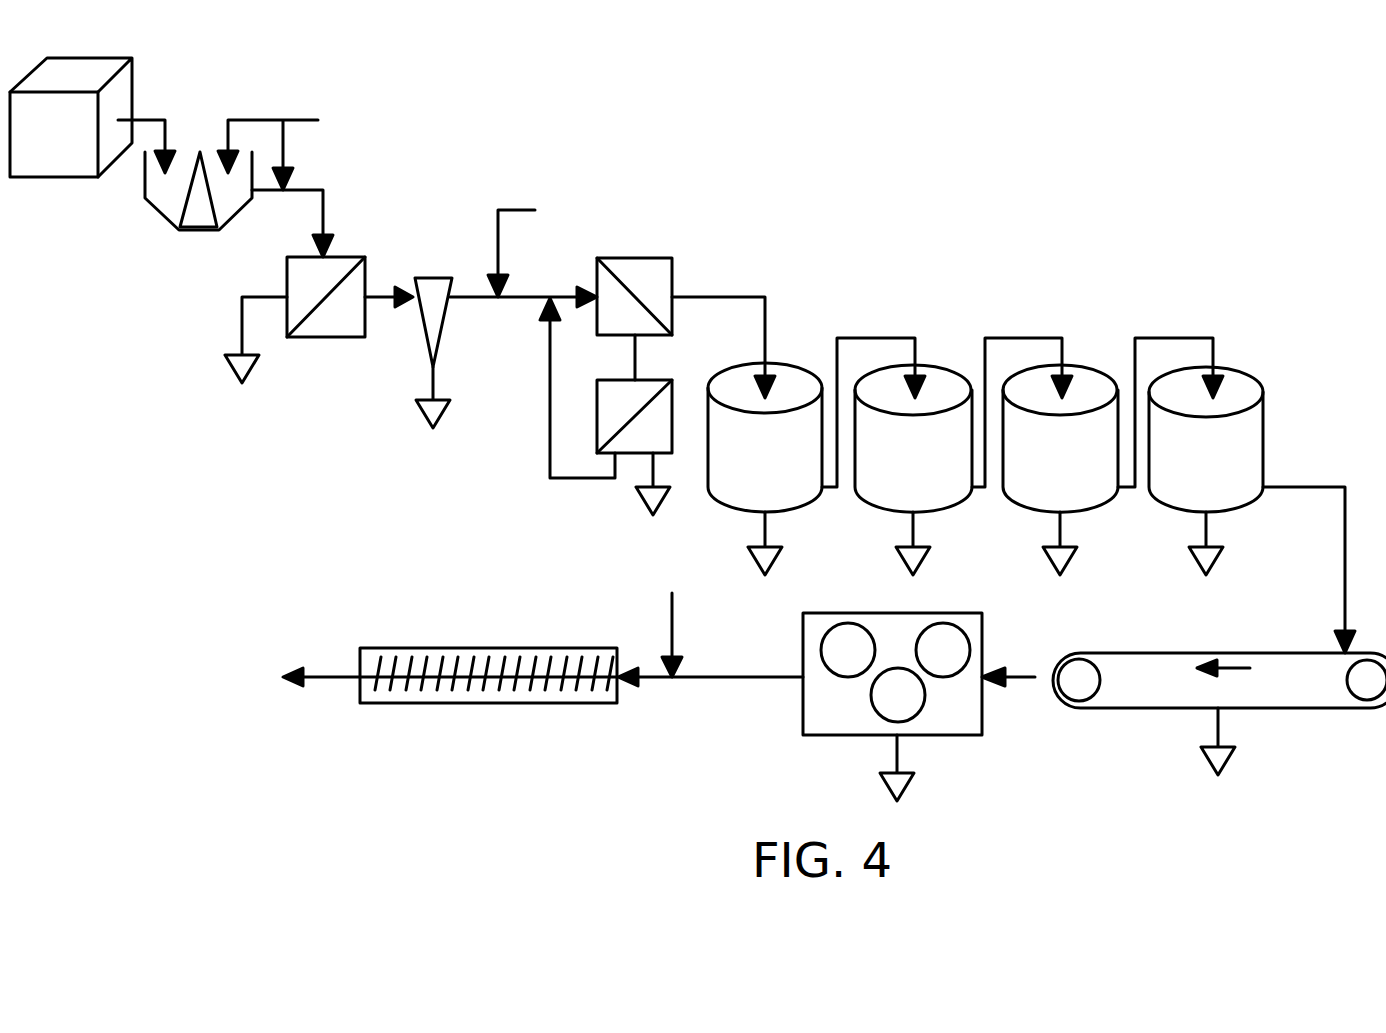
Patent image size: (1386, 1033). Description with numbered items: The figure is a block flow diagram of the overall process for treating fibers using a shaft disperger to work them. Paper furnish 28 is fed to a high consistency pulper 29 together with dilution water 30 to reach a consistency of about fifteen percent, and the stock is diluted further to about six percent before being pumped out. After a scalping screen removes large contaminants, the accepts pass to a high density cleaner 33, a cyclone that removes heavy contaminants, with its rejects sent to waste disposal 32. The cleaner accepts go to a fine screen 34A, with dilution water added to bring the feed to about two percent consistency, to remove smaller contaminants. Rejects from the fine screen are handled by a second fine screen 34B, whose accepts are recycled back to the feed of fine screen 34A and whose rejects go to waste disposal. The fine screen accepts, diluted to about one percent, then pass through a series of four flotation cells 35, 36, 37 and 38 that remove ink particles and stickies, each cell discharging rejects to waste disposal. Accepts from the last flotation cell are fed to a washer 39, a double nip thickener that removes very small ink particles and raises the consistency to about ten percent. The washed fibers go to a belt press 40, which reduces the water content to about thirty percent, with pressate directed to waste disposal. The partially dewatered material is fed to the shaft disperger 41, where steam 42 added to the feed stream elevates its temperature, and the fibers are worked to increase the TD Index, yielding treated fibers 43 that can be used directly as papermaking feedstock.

The paper furnish 28 is at (120, 95).
The high consistency pulper 29 is at (142, 204).
The dilution water 30 is at (262, 113).
The waste disposal 32 is at (242, 317).
The high density cleaner 33 is at (422, 332).
The fine screen 34A is at (673, 272).
The second fine screen 34B is at (672, 440).
The flotation cell 35 is at (773, 365).
The flotation cell 36 is at (932, 363).
The flotation cell 37 is at (1070, 363).
The flotation cell 38 is at (1232, 367).
The washer 39 is at (1322, 722).
The belt press 40 is at (983, 710).
The shaft disperger 41 is at (522, 705).
The steam 42 is at (668, 613).
The treated fibers 43 is at (318, 675).